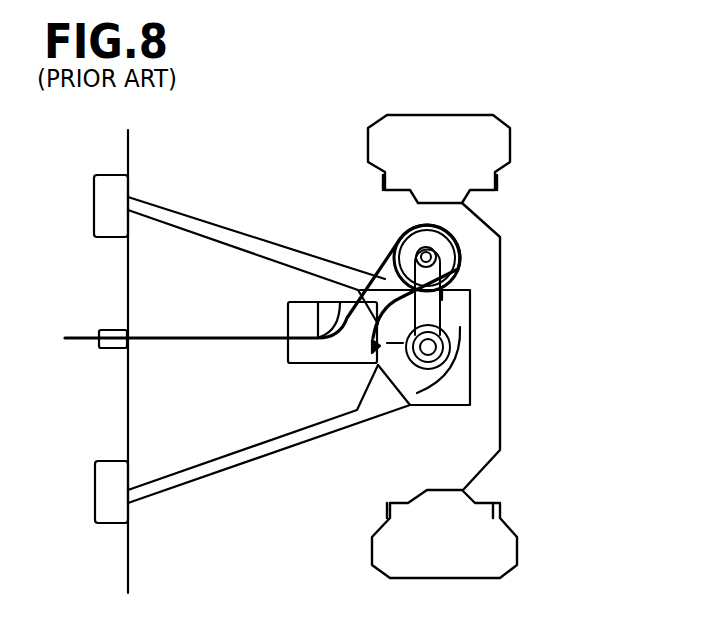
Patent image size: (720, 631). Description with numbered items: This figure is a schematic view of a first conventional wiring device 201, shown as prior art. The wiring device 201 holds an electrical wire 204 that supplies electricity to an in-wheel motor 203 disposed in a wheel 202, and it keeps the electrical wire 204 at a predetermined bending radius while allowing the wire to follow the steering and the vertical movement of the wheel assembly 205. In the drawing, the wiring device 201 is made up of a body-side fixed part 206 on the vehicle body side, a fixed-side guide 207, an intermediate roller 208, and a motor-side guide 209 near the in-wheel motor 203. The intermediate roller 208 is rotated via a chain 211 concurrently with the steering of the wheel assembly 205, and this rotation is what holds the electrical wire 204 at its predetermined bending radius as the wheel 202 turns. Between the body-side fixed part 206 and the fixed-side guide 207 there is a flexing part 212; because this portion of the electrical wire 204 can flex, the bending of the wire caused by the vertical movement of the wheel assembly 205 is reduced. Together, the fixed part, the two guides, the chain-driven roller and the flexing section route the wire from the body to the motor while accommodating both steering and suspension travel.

The wiring device 201 is at (373, 228).
The wheel 202 is at (503, 268).
The in-wheel motor 203 is at (470, 375).
The electrical wire 204 is at (380, 258).
The wheel assembly 205 is at (520, 198).
The body-side fixed part 206 is at (112, 328).
The fixed-side guide 207 is at (273, 298).
The intermediate roller 208 is at (447, 235).
The motor-side guide 209 is at (445, 305).
The chain 211 is at (442, 300).
The flexing part 212 is at (198, 343).